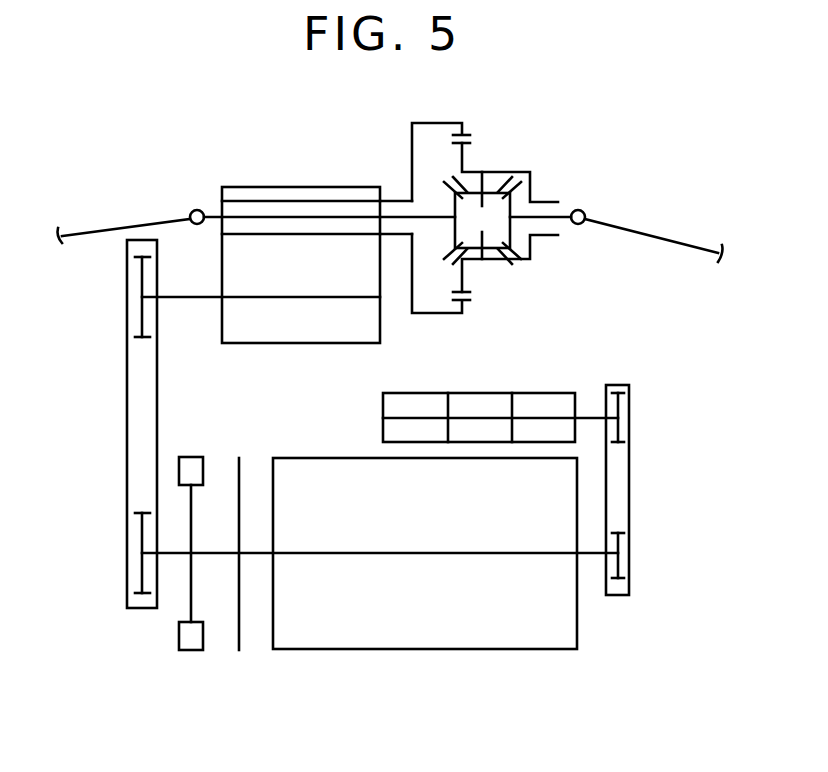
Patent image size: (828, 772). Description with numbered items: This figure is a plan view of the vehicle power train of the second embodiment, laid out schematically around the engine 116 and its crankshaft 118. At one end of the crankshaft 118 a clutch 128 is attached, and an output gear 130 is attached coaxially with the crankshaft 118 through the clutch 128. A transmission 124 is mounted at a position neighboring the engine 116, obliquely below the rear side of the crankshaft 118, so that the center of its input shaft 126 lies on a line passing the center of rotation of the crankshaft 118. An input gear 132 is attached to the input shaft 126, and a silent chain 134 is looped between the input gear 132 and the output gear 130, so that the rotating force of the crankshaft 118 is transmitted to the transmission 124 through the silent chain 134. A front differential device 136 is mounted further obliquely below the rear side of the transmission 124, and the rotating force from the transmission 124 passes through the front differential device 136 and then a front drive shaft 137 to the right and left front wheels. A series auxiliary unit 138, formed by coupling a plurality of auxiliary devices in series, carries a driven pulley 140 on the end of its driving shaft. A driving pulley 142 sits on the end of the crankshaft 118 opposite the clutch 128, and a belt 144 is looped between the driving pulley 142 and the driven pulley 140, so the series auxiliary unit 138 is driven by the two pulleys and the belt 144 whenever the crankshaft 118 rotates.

The engine 116 is at (512, 634).
The crankshaft 118 is at (397, 553).
The transmission 124 is at (322, 172).
The input shaft 126 is at (267, 297).
The clutch 128 is at (221, 664).
The output gear 130 is at (140, 542).
The input gear 132 is at (140, 288).
The silent chain 134 is at (127, 437).
The front differential device 136 is at (482, 152).
The front drive shaft 137 is at (252, 217).
The series auxiliary unit 138 is at (503, 374).
The driven pulley 140 is at (628, 410).
The driving pulley 142 is at (629, 567).
The belt 144 is at (629, 503).